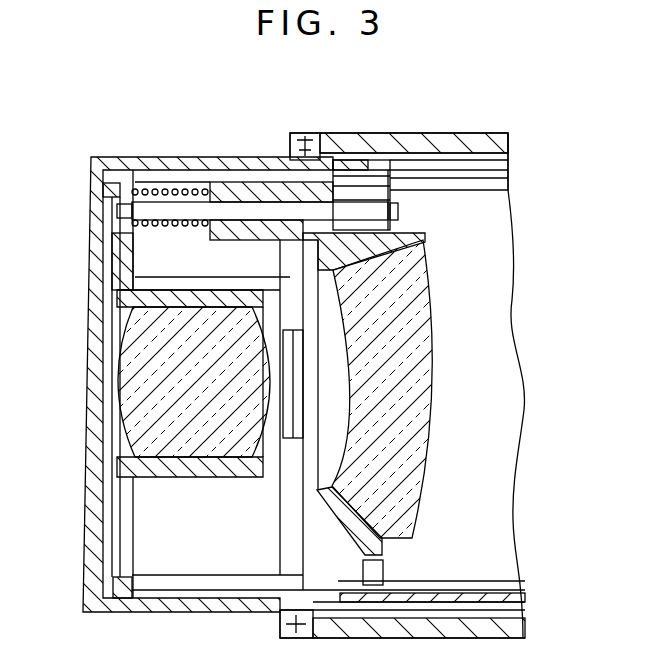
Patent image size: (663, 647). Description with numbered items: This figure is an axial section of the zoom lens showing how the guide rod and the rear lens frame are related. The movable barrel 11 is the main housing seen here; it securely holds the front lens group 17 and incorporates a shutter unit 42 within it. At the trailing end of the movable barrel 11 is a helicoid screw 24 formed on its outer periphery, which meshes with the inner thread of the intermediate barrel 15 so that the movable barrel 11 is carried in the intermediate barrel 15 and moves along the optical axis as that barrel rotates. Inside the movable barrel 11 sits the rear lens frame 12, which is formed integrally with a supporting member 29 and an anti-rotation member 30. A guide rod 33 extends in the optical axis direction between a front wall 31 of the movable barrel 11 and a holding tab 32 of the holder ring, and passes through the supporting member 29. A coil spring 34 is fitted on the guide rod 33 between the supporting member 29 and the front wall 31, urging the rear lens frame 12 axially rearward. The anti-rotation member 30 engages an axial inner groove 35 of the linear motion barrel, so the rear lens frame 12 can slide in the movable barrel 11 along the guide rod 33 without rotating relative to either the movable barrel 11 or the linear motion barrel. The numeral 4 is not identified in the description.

The movable barrel 11 is at (131, 157).
The intermediate barrel 15 is at (452, 131).
The helicoid screw 24 is at (366, 134).
The coil spring 34 is at (182, 189).
The guide rod 33 is at (233, 205).
The holding tab 32 is at (398, 198).
The front wall 31 is at (134, 258).
The supporting member 29 is at (244, 234).
The front lens group 17 is at (120, 387).
The rear lens frame 12 is at (428, 385).
The shutter unit 42 is at (195, 546).
The anti-rotation member 30 is at (383, 568).
The axial inner groove 35 is at (479, 582).
The base plate 4 is at (520, 594).